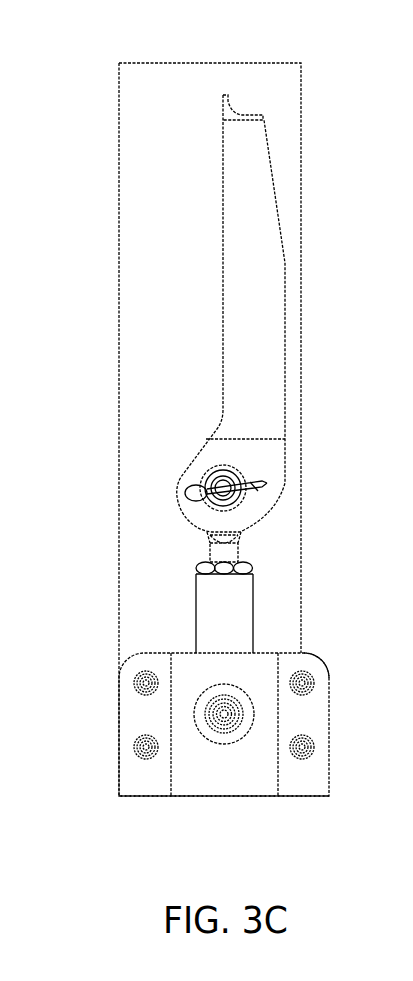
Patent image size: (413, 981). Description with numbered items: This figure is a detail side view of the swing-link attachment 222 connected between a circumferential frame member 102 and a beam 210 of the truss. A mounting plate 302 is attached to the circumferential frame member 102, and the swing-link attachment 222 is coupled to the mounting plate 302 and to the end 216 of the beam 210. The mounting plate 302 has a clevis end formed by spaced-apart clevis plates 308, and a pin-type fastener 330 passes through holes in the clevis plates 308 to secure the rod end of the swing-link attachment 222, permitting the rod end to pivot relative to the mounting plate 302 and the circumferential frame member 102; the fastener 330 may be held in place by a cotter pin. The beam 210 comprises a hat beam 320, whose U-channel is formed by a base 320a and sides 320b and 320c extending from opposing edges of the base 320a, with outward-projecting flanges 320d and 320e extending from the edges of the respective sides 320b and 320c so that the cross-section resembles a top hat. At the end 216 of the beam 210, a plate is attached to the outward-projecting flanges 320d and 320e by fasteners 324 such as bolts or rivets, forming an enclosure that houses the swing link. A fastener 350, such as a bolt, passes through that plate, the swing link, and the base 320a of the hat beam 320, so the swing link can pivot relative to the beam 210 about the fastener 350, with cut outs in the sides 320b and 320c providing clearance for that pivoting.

The circumferential frame member 102 is at (188, 85).
The mounting plate 302 is at (259, 302).
The clevis plates 308 is at (262, 518).
The fastener 330 is at (245, 467).
The swing-link attachment 222 is at (268, 587).
The end of the beam 216 is at (319, 655).
The hat beam 320 is at (241, 766).
The base 320a is at (218, 779).
The side 320b is at (170, 772).
The side 320c is at (278, 774).
The outward-projecting flange 320d is at (133, 792).
The outward-projecting flange 320e is at (310, 794).
The beam 210 is at (117, 782).
The fasteners 324 is at (135, 683).
The fastener 350 is at (229, 726).